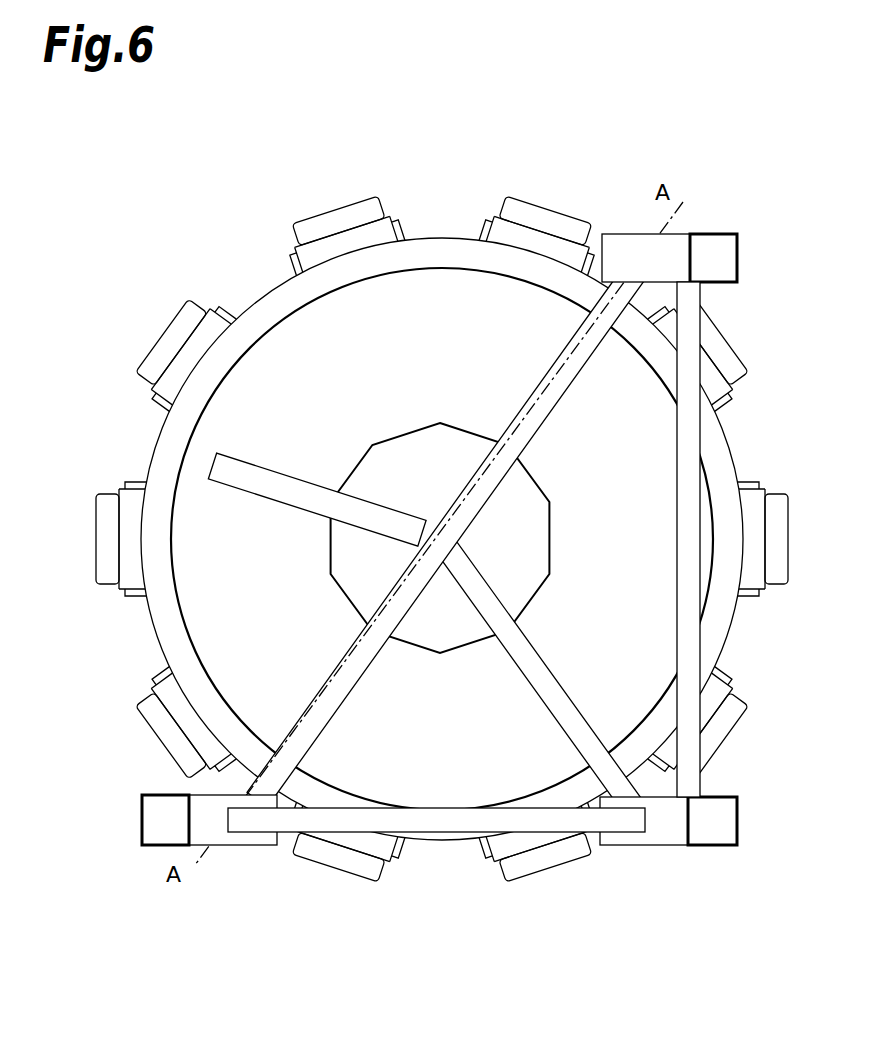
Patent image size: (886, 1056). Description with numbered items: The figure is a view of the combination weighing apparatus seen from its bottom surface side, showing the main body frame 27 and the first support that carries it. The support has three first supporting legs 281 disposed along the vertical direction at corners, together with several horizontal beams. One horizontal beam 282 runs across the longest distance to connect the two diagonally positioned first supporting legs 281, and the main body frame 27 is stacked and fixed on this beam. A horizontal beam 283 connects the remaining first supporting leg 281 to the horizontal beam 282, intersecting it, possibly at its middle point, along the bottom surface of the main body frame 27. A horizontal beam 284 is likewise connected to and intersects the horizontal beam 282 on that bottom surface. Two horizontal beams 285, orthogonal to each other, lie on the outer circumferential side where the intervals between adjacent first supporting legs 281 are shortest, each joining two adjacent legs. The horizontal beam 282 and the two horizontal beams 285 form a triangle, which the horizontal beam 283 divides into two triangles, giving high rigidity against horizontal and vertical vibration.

The main body frame 27 is at (333, 352).
The first supporting leg 281 is at (717, 253).
The horizontal beam 282 is at (570, 368).
The horizontal beam 283 is at (566, 715).
The horizontal beam 284 is at (322, 502).
The horizontal beam 285 is at (692, 442).